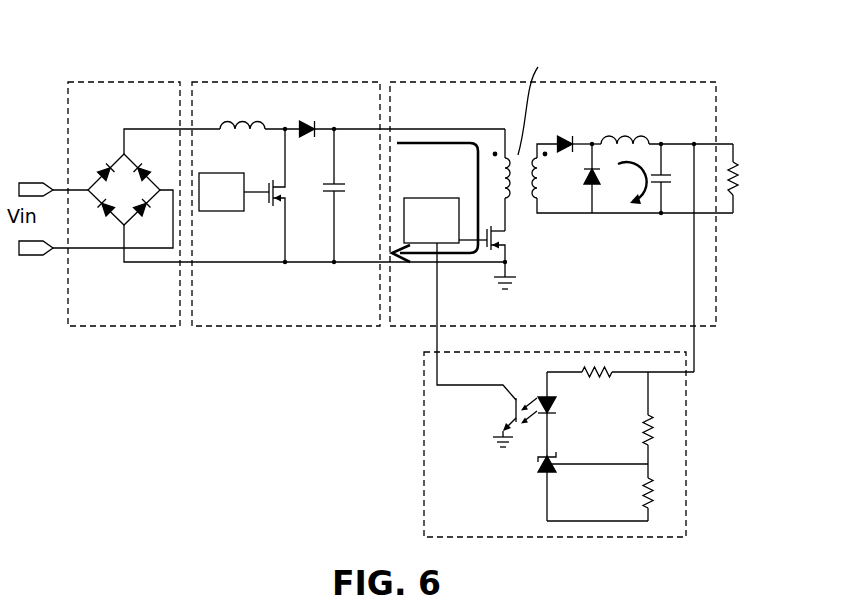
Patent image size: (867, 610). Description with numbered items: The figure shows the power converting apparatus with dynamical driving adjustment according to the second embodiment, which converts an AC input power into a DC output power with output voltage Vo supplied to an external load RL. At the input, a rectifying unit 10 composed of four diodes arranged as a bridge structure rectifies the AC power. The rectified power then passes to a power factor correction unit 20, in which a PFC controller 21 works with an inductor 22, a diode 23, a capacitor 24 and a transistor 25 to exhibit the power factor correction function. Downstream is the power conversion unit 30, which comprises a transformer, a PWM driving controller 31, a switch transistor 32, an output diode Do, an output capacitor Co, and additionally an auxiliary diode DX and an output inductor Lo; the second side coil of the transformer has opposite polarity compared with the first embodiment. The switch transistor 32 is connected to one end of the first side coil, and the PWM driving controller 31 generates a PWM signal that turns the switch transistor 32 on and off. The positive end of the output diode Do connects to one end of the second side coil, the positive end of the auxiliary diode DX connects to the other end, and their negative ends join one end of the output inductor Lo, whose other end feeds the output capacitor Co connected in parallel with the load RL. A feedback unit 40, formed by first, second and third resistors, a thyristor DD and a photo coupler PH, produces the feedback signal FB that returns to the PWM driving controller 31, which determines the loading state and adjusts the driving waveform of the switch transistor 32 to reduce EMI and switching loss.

The rectifying unit 10 is at (124, 82).
The power factor correction unit 20 is at (287, 82).
The PFC controller 21 is at (222, 211).
The inductor 22 is at (243, 123).
The diode 23 is at (302, 121).
The capacitor 24 is at (340, 182).
The transistor 25 is at (286, 196).
The power conversion unit 30 is at (583, 82).
The PWM driving controller 31 is at (432, 197).
The switch transistor 32 is at (506, 241).
The feedback unit 40 is at (424, 445).